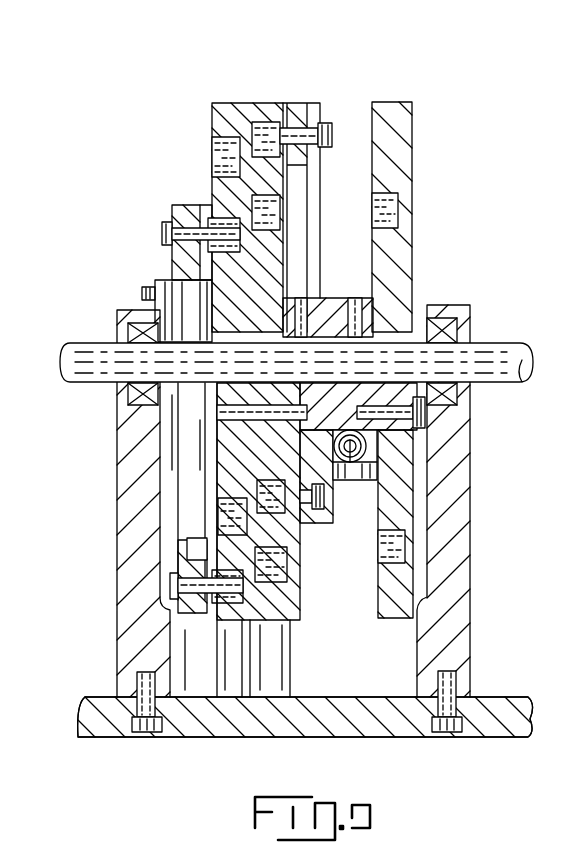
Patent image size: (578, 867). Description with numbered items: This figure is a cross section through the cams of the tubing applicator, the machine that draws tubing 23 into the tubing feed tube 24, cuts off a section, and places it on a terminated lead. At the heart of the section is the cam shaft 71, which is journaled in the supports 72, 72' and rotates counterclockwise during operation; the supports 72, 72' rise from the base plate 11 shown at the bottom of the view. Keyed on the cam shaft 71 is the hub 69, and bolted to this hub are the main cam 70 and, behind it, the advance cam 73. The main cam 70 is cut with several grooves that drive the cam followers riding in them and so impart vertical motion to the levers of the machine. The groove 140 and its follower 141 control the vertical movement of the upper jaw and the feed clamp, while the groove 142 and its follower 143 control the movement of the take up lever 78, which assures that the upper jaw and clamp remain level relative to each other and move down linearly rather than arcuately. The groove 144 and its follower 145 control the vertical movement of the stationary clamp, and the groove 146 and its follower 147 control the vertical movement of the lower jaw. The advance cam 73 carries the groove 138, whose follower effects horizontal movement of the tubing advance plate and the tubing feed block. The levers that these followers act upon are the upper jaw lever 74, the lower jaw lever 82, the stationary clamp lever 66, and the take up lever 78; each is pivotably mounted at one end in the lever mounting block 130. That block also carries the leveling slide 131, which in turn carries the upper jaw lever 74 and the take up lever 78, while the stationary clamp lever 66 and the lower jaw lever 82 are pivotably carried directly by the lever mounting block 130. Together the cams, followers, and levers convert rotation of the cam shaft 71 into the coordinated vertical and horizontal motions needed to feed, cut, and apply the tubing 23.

The main cam 70 is at (218, 112).
The groove 144 is at (253, 128).
The cam follower 145 is at (296, 120).
The groove 142 is at (218, 153).
The stationary clamp lever 66 is at (298, 117).
The advance cam 73 is at (413, 128).
The cam follower 141 is at (220, 235).
The leveling slide 131 is at (188, 222).
The groove 146 is at (280, 215).
The upper jaw lever 74 is at (185, 260).
The groove 140 is at (281, 236).
The hub 69 is at (328, 308).
The cam shaft 71 is at (528, 358).
The tubing feed tube 24 is at (378, 466).
The tubing 23 is at (348, 480).
The lower jaw lever 82 is at (302, 522).
The groove 138 is at (380, 548).
The cam follower 147 is at (286, 512).
The support 72' is at (116, 503).
The support 72 is at (482, 501).
The take up lever 78 is at (196, 610).
The cam follower 143 is at (240, 612).
The base plate 11 is at (528, 700).
The lever mounting block 130 is at (305, 734).